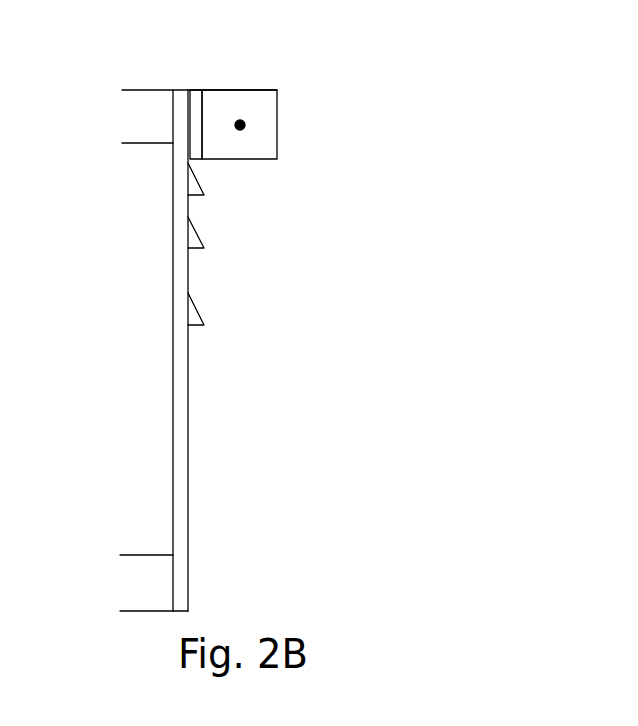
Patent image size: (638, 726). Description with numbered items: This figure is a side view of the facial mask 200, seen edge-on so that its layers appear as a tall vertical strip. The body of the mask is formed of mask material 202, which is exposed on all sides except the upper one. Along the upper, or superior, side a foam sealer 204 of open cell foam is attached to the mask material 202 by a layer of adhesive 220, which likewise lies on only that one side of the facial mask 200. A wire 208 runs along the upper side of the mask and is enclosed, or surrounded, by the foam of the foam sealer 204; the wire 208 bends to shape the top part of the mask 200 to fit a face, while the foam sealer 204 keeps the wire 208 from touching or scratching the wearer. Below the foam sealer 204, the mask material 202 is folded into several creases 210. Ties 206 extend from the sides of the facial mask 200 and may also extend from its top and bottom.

The facial mask 200 is at (437, 232).
The mask material 202 is at (173, 274).
The foam sealer 204 is at (277, 124).
The ties 206 is at (142, 145).
The wire 208 is at (241, 122).
The creases 210 is at (204, 195).
The adhesive 220 is at (202, 90).